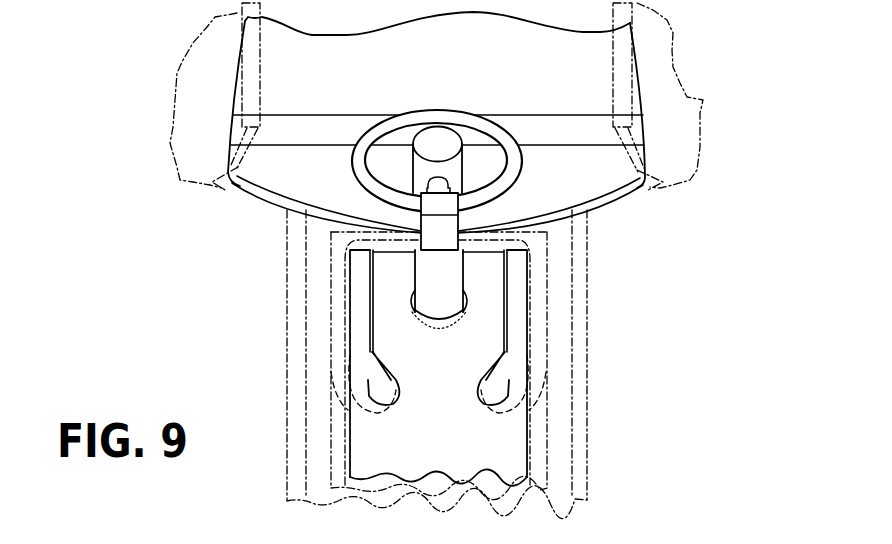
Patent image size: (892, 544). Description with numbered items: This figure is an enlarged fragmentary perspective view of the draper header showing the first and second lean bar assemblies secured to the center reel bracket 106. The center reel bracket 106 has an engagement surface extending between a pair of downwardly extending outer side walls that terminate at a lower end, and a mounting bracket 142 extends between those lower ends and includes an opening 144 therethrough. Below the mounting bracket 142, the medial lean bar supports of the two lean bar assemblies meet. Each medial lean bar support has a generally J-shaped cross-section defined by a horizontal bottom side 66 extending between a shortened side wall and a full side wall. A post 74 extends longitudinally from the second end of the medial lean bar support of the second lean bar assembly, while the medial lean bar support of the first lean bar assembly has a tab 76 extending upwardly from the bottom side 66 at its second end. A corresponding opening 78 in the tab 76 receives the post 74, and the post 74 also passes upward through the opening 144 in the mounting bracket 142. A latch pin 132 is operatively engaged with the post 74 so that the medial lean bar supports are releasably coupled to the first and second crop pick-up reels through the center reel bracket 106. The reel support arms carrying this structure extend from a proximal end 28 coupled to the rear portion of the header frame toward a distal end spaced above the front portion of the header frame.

The proximal end 28 is at (605, 443).
The horizontal bottom side 66 is at (452, 459).
The post 74 is at (452, 275).
The tab 76 is at (528, 350).
The opening 78 is at (472, 302).
The center reel bracket 106 is at (710, 156).
The latch pin 132 is at (449, 225).
The mounting bracket 142 is at (267, 175).
The opening 144 is at (407, 183).